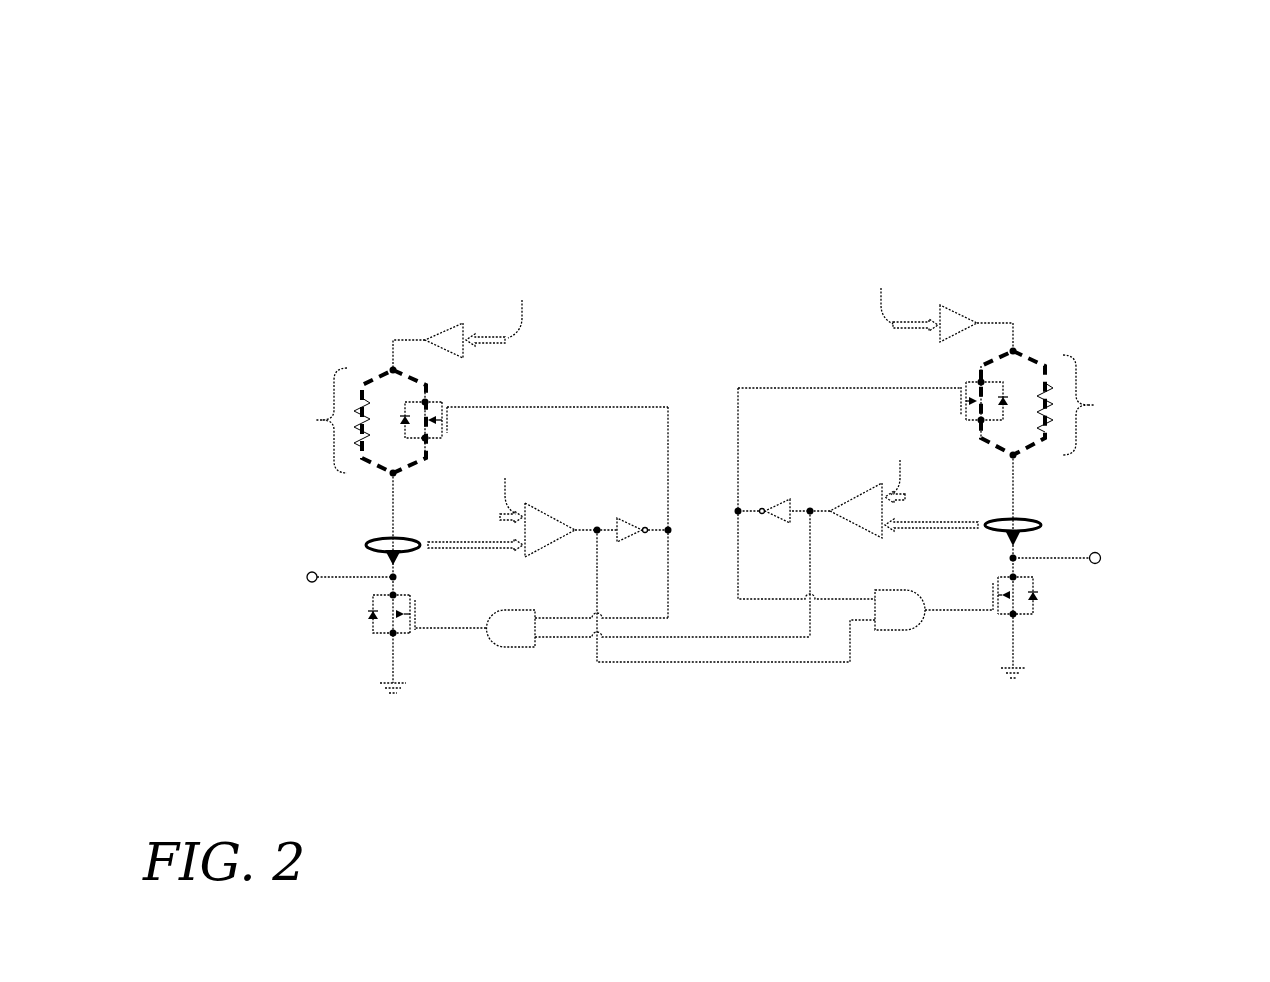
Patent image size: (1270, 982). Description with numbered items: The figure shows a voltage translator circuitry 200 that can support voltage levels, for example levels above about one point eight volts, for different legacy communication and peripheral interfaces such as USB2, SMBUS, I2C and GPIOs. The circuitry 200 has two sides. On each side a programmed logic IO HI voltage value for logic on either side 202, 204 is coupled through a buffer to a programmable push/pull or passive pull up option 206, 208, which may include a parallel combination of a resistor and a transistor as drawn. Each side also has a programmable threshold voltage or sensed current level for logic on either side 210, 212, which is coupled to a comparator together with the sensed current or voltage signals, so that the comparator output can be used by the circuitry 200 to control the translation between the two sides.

The voltage translator circuitry 200 is at (1142, 155).
The programmed logic IO HI voltage value for logic on one side 202 is at (577, 290).
The programmed logic IO HI voltage value for logic on the other side 204 is at (795, 283).
The programmable push/pull or passive pull up option 206 is at (240, 400).
The programmable push/pull or passive pull up option 208 is at (1135, 383).
The programmable threshold voltage or sensed current level for logic on one side 210 is at (460, 485).
The programmable threshold voltage or sensed current level for logic on the other si 212 is at (920, 478).